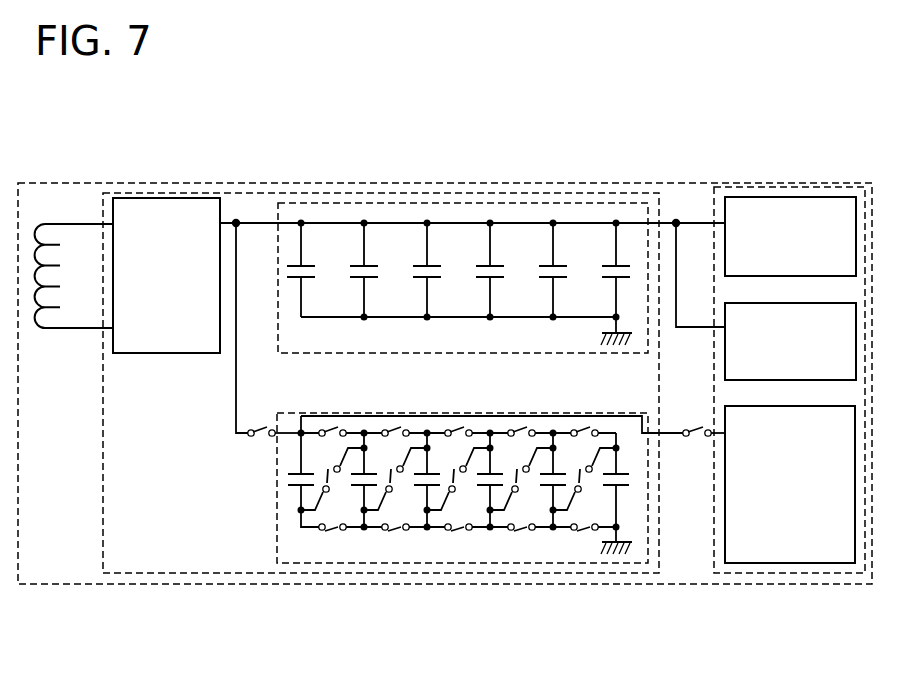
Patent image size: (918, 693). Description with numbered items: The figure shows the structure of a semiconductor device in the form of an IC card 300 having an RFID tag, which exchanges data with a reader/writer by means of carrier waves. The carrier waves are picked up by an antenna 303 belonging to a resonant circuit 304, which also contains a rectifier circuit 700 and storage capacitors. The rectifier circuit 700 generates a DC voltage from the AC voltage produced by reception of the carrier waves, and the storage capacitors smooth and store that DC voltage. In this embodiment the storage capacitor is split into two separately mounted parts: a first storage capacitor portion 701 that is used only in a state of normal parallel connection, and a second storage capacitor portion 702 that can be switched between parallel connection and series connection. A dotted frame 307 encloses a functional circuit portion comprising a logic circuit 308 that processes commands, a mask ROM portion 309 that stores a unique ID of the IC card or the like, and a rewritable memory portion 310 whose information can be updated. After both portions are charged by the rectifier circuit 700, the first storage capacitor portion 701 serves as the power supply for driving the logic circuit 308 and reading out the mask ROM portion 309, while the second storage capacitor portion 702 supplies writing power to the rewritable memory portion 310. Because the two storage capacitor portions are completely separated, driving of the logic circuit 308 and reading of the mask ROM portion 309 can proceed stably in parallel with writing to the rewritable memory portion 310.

The IC card 300 is at (102, 183).
The antenna 303 is at (58, 330).
The resonant circuit 304 is at (192, 573).
The dotted frame 307 is at (715, 197).
The logic circuit 308 is at (790, 236).
The mask ROM portion 309 is at (790, 341).
The rewritable memory portion 310 is at (790, 484).
The rectifier circuit 700 is at (166, 275).
The first storage capacitor portion 701 is at (325, 202).
The second storage capacitor portion 702 is at (397, 562).